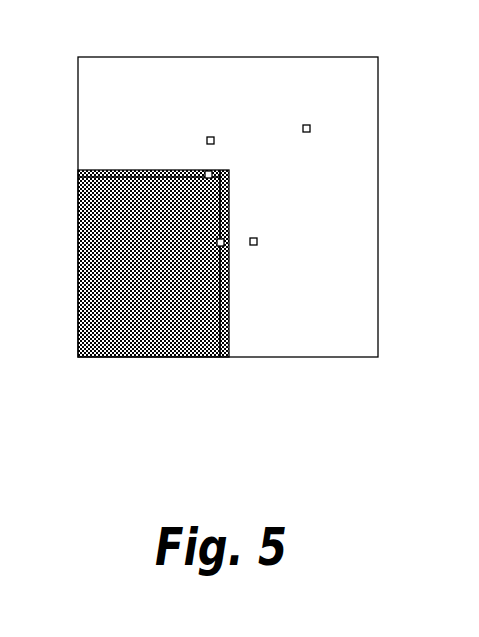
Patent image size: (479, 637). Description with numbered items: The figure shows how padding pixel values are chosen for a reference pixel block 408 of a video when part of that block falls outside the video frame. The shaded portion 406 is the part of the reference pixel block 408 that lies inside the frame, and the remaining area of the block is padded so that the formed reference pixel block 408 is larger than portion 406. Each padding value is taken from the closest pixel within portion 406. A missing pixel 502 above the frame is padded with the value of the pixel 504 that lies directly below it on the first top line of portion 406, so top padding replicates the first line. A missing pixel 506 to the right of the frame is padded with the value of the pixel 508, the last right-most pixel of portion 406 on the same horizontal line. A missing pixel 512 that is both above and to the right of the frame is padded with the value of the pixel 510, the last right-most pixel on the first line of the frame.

The reference pixel block 408 is at (379, 67).
The portion of the reference pixel block inside the video frame 406 is at (78, 318).
The last right-most pixel on the first line 510 is at (221, 171).
The pixel on the first top line 504 is at (205, 179).
The missing pixel above the video frame 502 is at (224, 129).
The missing pixel above and to the right of the video frame 512 is at (310, 125).
The missing pixel to the right of the video frame 506 is at (257, 238).
The last right-most pixel on the same horizontal line 508 is at (217, 246).